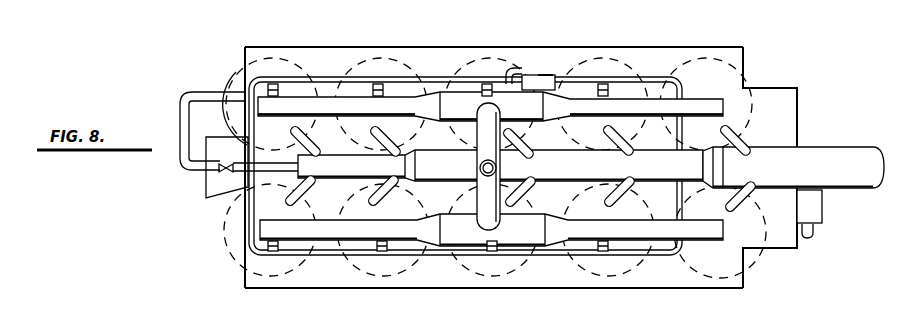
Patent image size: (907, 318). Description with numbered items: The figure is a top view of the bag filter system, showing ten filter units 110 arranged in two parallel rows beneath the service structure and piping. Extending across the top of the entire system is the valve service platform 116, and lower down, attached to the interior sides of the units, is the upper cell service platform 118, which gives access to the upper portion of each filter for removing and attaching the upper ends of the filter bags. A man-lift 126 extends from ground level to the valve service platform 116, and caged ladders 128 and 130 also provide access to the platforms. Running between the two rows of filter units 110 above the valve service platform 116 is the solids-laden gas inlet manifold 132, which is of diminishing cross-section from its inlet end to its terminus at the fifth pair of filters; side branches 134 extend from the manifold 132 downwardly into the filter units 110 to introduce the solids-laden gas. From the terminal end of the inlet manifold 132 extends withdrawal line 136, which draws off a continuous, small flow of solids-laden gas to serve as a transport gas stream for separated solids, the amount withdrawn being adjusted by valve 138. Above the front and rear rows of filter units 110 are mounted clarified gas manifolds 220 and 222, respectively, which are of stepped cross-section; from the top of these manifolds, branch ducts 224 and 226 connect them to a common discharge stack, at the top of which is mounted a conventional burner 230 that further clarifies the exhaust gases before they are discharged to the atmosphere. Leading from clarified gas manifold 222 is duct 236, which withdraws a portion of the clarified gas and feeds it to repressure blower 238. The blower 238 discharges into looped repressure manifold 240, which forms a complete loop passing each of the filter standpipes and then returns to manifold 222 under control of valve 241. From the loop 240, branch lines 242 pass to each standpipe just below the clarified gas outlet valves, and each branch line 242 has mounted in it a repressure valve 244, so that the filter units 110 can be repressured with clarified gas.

The filter units 110 is at (240, 84).
The valve service platform 116 is at (280, 282).
The upper cell service platform 118 is at (216, 142).
The man-lift 126 is at (808, 206).
The caged ladder 128 is at (814, 233).
The caged ladder 130 is at (322, 42).
The solids-laden gas inlet manifold 132 is at (832, 161).
The side branches 134 is at (376, 187).
The withdrawal line 136 is at (181, 126).
The valve 138 is at (222, 175).
The clarified gas manifold 220 is at (682, 243).
The clarified gas manifold 222 is at (722, 109).
The branch duct 224 is at (484, 183).
The branch duct 226 is at (482, 139).
The burner 230 is at (498, 167).
The duct 236 is at (538, 69).
The repressure blower 238 is at (545, 76).
The looped repressure manifold 240 is at (678, 80).
The valve 241 is at (508, 72).
The branch lines 242 is at (376, 88).
The repressure valve 244 is at (268, 90).